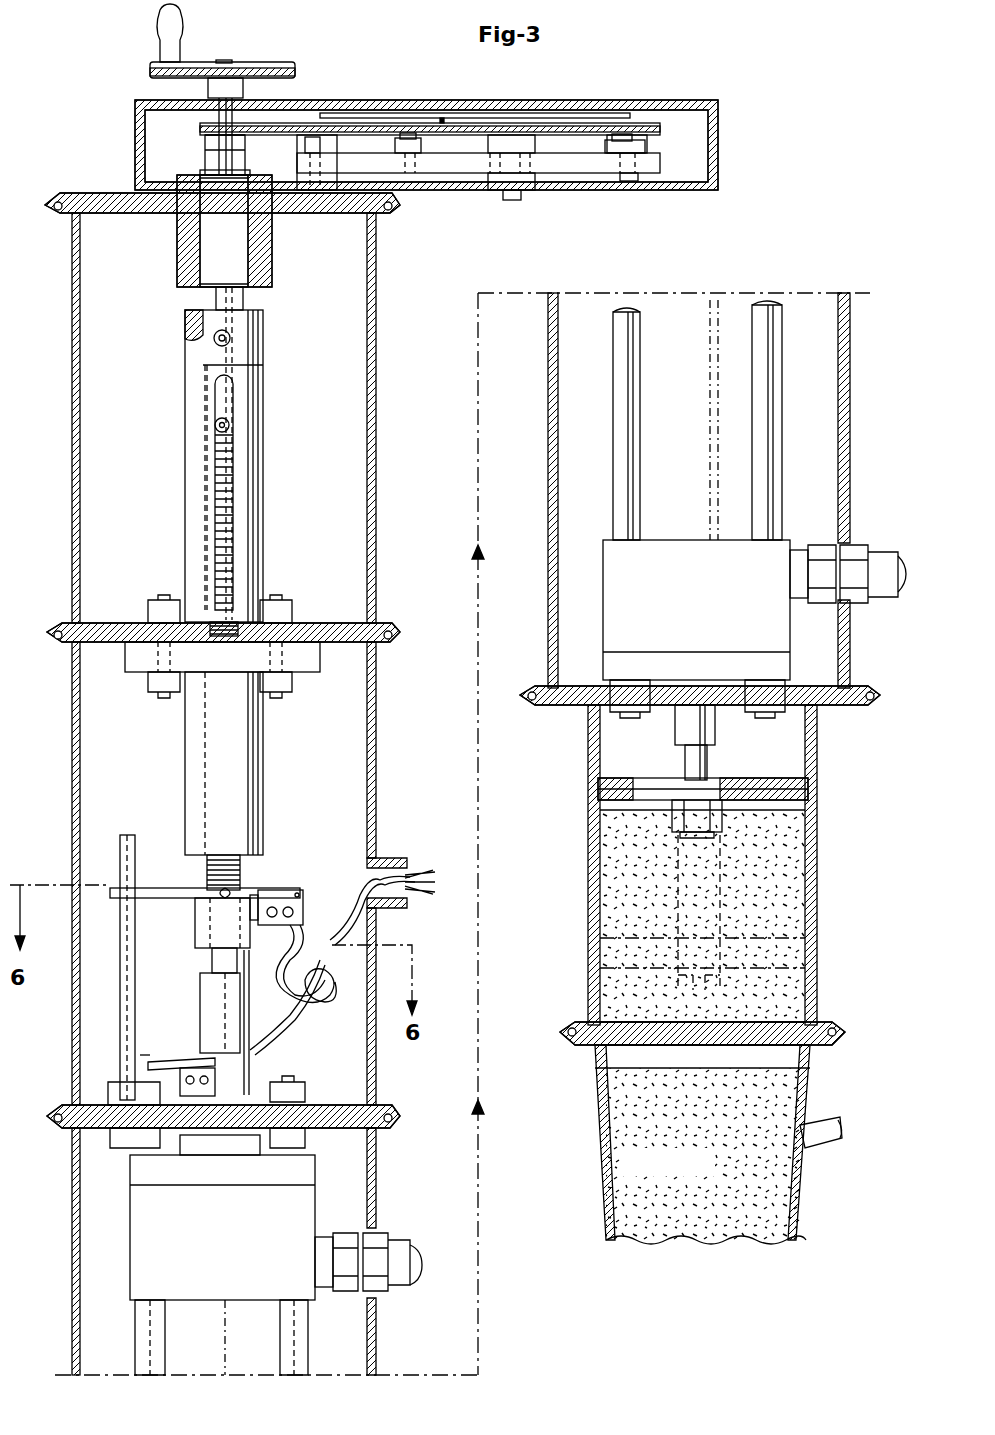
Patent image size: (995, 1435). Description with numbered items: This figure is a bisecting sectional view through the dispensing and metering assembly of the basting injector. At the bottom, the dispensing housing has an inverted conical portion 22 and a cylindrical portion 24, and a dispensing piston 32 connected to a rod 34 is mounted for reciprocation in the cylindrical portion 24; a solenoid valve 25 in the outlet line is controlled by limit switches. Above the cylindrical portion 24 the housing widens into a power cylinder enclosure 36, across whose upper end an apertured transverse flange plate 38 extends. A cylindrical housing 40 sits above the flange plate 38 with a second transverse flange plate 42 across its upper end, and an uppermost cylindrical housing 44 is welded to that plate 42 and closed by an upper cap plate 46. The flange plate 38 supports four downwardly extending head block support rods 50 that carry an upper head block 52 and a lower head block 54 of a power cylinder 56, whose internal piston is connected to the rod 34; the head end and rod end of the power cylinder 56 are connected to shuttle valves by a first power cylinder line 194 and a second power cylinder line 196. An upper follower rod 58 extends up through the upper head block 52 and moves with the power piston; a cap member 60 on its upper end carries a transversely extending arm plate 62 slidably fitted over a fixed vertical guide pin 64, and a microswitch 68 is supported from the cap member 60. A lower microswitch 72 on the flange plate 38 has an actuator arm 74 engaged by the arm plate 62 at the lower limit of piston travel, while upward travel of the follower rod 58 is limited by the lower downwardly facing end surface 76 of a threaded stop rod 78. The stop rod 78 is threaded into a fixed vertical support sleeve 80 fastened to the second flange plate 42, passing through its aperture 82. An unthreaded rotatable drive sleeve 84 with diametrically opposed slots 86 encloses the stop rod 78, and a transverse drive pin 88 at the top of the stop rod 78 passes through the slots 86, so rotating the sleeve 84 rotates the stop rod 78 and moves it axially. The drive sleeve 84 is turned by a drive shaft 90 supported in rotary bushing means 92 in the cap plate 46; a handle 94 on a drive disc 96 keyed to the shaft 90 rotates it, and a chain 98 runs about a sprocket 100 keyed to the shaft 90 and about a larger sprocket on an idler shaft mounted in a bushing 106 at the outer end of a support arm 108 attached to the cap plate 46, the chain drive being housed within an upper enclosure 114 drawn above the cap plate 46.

The inverted conical portion 22 is at (792, 1205).
The cylindrical portion 24 is at (817, 878).
The solenoid valve 25 is at (702, 1025).
The dispensing piston 32 is at (655, 778).
The rod 34 is at (715, 732).
The power cylinder enclosure 36 is at (72, 1225).
The transverse flange plate 38 is at (345, 1130).
The cylindrical housing 40 is at (72, 790).
The second transverse flange plate 42 is at (345, 622).
The uppermost cylindrical housing 44 is at (70, 418).
The upper cap plate 46 is at (90, 195).
The head block support rods 50 is at (300, 1080).
The upper head block 52 is at (222, 1217).
The lower head block 54 is at (696, 610).
The power cylinder 56 is at (620, 318).
The upper follower rod 58 is at (240, 1000).
The cap member 60 is at (192, 935).
The transversely extending arm plate 62 is at (180, 888).
The vertical guide pin 64 is at (130, 835).
The microswitch 68 is at (345, 905).
The lower microswitch 72 is at (243, 1075).
The actuator arm 74 is at (178, 1060).
The lower downwardly facing end surface 76 is at (262, 892).
The threaded stop rod 78 is at (226, 628).
The vertical support sleeve 80 is at (262, 768).
The aperture 82 is at (185, 668).
The rotatable drive sleeve 84 is at (262, 410).
The diametrically opposed slots 86 is at (228, 388).
The transverse drive pin 88 is at (228, 427).
The drive shaft 90 is at (245, 297).
The rotary bushing means 92 is at (255, 245).
The handle 94 is at (180, 12).
The drive disc 96 is at (285, 62).
The chain 98 is at (300, 123).
The sprocket 100 is at (205, 132).
The bushing 106 is at (530, 178).
The support arm 108 is at (445, 165).
The housing 114 is at (718, 152).
The first power cylinder line 194 is at (400, 1255).
The second power cylinder line 196 is at (880, 552).